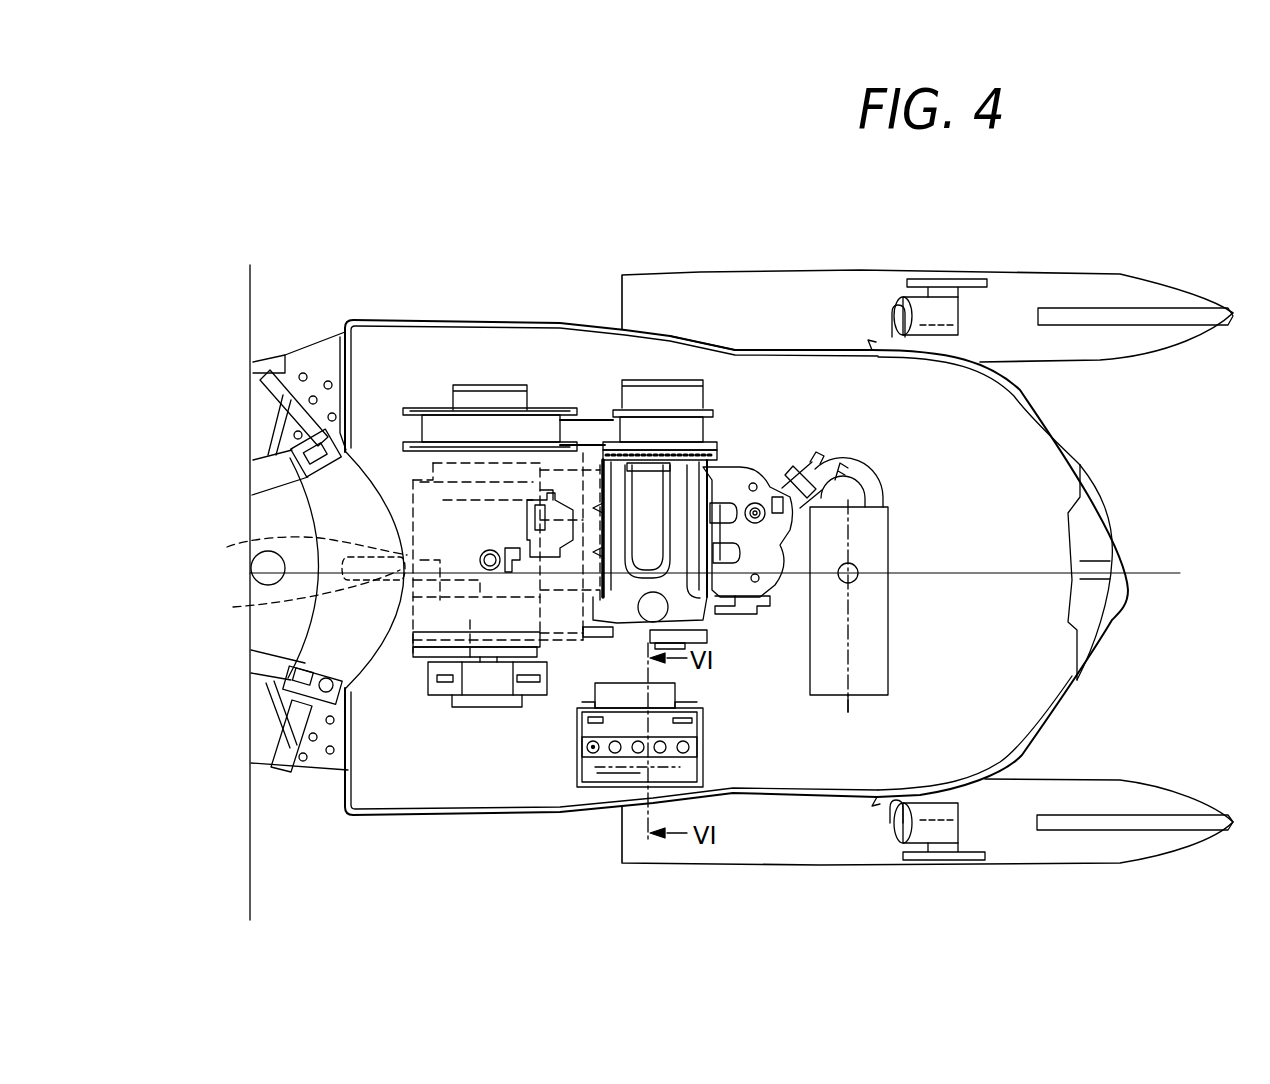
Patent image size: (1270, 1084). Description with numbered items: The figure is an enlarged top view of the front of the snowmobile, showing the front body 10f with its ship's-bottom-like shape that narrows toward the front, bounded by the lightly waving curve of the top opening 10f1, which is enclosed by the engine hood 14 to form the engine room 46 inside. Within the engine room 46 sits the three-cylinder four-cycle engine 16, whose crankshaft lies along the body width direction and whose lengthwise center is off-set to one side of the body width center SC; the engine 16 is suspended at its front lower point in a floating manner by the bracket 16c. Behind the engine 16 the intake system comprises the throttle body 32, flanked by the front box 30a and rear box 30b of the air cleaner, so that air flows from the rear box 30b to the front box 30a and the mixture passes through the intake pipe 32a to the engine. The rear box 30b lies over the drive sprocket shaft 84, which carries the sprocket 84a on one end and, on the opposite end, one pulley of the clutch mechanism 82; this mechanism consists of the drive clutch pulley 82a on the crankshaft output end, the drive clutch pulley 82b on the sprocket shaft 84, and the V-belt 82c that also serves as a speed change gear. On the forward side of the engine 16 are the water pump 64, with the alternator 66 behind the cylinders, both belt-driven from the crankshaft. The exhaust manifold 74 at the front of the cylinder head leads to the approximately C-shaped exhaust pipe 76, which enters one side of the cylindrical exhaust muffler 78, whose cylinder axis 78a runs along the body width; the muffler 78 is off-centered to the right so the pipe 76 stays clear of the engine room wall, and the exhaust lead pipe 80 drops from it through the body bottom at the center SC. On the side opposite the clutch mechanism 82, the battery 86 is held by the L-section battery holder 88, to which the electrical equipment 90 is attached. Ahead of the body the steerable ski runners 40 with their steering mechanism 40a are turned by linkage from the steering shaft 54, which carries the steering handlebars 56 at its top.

The front body 10f is at (474, 272).
The top opening 10f1 is at (720, 380).
The engine hood 14 is at (1050, 410).
The four-cycle engine 16 is at (697, 610).
The bracket 16c is at (687, 493).
The front box 30a is at (551, 695).
The rear box 30b is at (291, 595).
The throttle body 32 is at (590, 477).
The intake pipe 32a is at (560, 490).
The ski runner 40 is at (1017, 303).
The steering mechanism 40a is at (883, 313).
The engine room 46 is at (392, 348).
The steering shaft 54 is at (298, 558).
The steering handlebars 56 is at (287, 388).
The water pump 64 is at (733, 610).
The alternator 66 is at (585, 627).
The exhaust manifold 74 is at (720, 490).
The exhaust pipe 76 is at (867, 472).
The exhaust muffler 78 is at (870, 537).
The cylinder axis 78a is at (850, 677).
The exhaust lead pipe 80 is at (860, 590).
The clutch mechanism 82 is at (723, 216).
The drive clutch pulley 82a is at (650, 393).
The drive clutch pulley 82b is at (500, 393).
The V-belt 82c is at (583, 430).
The drive sprocket shaft 84 is at (490, 687).
The sprocket 84a is at (447, 687).
The battery 86 is at (597, 773).
The battery holder 88 is at (707, 713).
The electrical equipment 90 is at (660, 697).
The center of the body width direction SC is at (1020, 570).